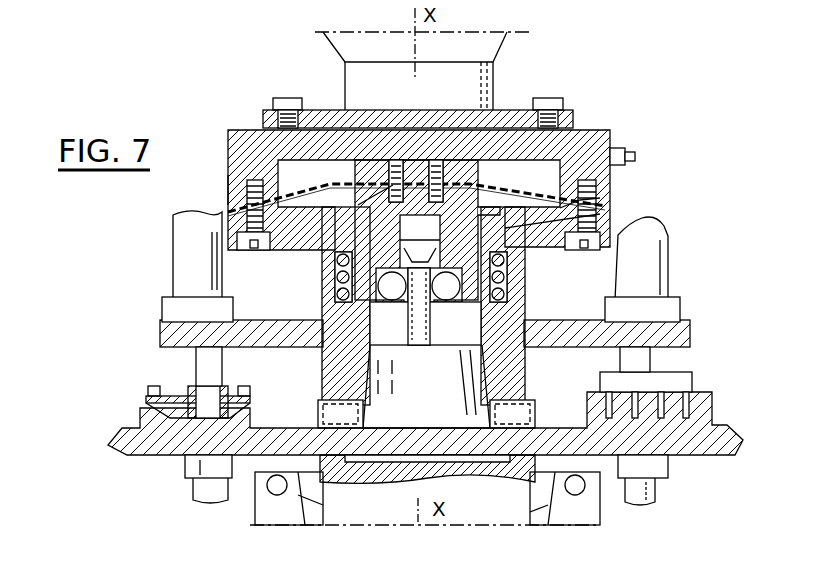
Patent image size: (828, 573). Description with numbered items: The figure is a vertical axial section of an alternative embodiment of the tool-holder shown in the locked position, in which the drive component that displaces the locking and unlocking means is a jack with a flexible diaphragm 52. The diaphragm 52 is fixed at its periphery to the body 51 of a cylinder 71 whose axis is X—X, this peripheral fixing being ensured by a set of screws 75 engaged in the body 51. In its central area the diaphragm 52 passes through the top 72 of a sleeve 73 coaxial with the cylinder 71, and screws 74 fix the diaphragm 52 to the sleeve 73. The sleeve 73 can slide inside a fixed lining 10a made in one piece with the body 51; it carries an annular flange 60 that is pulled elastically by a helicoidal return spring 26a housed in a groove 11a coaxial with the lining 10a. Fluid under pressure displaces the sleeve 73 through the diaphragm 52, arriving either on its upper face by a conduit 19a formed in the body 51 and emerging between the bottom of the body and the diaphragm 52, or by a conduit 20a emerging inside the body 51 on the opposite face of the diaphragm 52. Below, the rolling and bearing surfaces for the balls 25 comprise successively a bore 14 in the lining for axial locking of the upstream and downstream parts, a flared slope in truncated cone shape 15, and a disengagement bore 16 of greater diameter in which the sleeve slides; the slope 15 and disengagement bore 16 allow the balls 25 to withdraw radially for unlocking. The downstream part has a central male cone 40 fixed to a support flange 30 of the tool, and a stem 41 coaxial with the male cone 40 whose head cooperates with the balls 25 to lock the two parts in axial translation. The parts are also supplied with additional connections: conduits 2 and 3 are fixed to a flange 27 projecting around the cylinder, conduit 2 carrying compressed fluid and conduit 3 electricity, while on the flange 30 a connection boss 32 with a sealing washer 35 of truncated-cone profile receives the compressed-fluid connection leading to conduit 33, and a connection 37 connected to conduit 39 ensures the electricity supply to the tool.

The conduit 2 is at (176, 244).
The conduit 3 is at (657, 272).
The fixed lining 10a is at (610, 212).
The groove 11a is at (500, 297).
The bore 14 is at (362, 186).
The flared slope in truncated cone shape 15 is at (426, 386).
The disengagement bore 16 is at (333, 326).
The conduit 19a is at (615, 148).
The conduit 20a is at (595, 200).
The balls 25 is at (396, 300).
The helicoidal return spring 26a is at (340, 294).
The flange 27 is at (690, 329).
The support flange 30 is at (722, 424).
The connection boss 32 is at (146, 408).
The conduit 33 is at (192, 498).
The sealing washer 35 is at (242, 410).
The additional connection 37 is at (692, 378).
The conduit 39 is at (660, 491).
The central male cone 40 is at (452, 382).
The stem 41 is at (432, 334).
The body 51 is at (235, 138).
The flexible diaphragm 52 is at (588, 128).
The annular flange 60 is at (290, 232).
The cylinder 71 is at (224, 184).
The top of sleeve 72 is at (482, 112).
The sleeve 73 is at (427, 230).
The screws 74 is at (420, 126).
The screws 75 is at (244, 250).